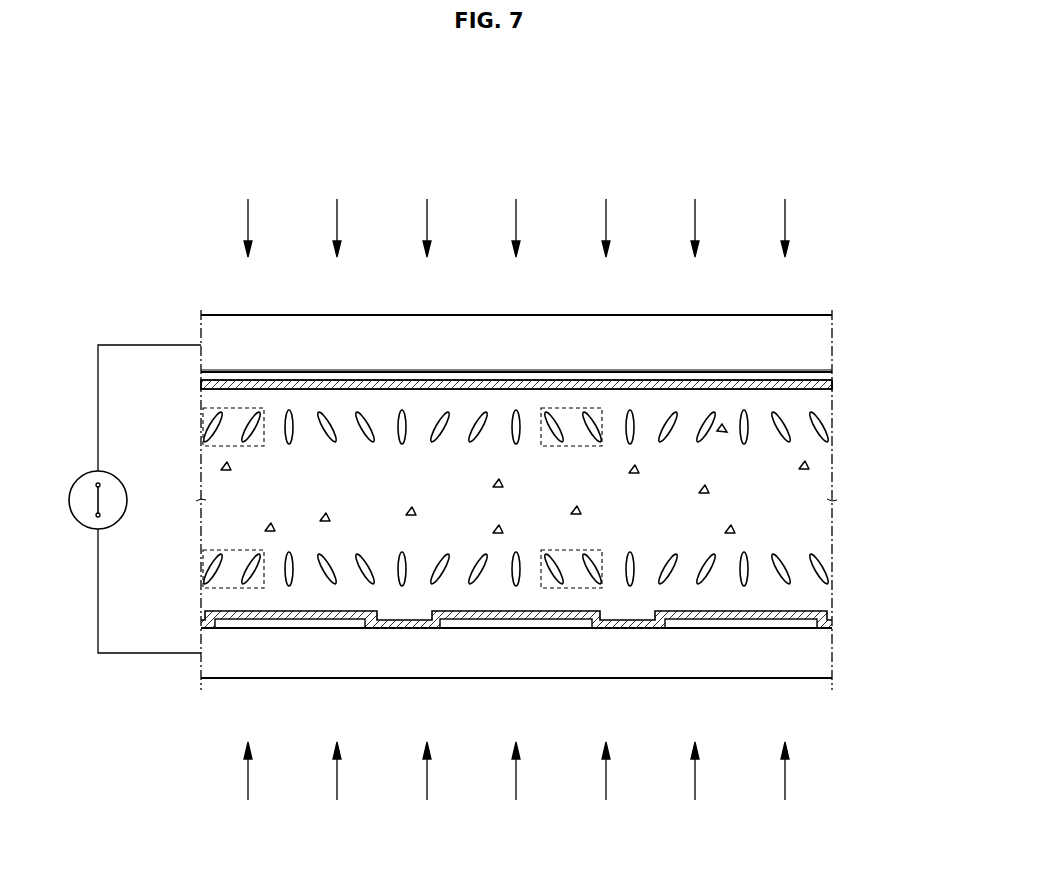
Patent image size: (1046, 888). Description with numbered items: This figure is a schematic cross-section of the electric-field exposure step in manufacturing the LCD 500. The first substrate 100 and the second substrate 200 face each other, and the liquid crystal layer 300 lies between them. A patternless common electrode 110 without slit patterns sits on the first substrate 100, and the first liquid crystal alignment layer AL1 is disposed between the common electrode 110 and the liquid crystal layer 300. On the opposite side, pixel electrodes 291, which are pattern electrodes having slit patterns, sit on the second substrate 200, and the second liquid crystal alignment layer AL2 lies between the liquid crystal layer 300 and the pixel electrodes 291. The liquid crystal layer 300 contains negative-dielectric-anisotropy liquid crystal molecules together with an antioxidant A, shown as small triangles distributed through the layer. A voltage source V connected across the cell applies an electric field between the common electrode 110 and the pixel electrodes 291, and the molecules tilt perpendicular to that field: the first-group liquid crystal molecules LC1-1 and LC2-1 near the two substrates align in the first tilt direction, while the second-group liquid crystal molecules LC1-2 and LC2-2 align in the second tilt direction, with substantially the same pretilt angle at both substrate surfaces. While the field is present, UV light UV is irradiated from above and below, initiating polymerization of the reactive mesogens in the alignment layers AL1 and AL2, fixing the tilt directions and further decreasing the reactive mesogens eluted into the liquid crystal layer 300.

The LCD 500 is at (517, 121).
The first substrate 100 is at (836, 346).
The common electrode 110 is at (836, 374).
The first liquid crystal alignment layer AL1 is at (836, 391).
The liquid crystal layer 300 is at (843, 400).
The second liquid crystal alignment layer AL2 is at (829, 617).
The pixel electrodes 291 is at (790, 628).
The second substrate 200 is at (836, 679).
The "1-1" liquid crystal molecules LC1-1 is at (205, 426).
The "1-2" liquid crystal molecules LC1-2 is at (572, 408).
The "2-1" liquid crystal molecules LC2-1 is at (205, 568).
The "2-2" liquid crystal molecules LC2-2 is at (573, 590).
The antioxidant A is at (722, 424).
The voltage source V is at (135, 499).
The UV light UV is at (516, 500).